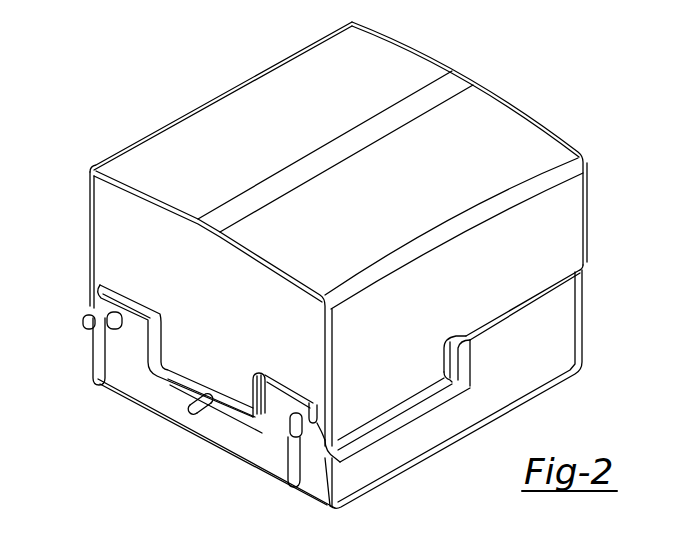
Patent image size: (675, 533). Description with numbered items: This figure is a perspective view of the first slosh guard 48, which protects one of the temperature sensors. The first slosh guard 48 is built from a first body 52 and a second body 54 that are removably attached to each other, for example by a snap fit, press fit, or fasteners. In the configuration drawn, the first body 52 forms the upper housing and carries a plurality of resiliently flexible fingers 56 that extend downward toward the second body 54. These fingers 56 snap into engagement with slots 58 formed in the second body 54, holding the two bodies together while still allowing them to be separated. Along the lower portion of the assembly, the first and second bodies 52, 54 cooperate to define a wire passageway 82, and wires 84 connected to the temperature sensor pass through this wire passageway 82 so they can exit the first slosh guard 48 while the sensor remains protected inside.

The first slosh guard 48 is at (340, 273).
The first body 52 is at (587, 202).
The second body 54 is at (585, 332).
The resiliently flexible fingers 56 is at (82, 322).
The slots 58 is at (103, 387).
The wire passageway 82 is at (193, 386).
The wires 84 is at (198, 400).